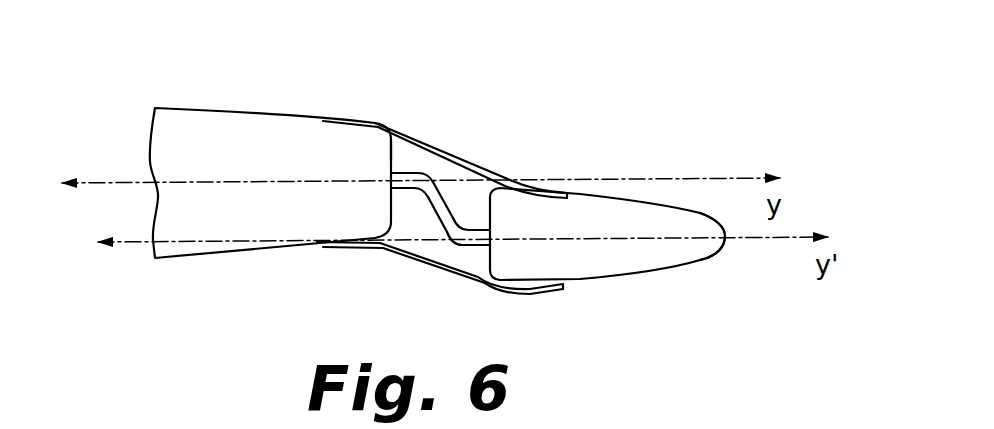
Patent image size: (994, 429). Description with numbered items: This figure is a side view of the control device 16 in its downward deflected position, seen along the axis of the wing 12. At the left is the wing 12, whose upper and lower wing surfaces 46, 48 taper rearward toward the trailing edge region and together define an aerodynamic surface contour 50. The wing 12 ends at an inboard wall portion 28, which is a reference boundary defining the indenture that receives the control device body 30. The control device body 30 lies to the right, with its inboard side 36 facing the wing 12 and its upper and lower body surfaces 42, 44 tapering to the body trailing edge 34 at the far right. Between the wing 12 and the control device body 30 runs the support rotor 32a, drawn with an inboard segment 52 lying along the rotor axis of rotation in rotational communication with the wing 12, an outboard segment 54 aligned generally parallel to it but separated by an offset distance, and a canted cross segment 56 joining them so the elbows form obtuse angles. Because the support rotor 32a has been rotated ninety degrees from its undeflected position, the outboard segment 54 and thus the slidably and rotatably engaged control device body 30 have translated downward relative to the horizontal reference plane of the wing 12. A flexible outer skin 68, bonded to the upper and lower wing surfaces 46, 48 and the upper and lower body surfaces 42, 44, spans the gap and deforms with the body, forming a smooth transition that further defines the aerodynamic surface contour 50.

The wing 12 is at (284, 161).
The control device 16 is at (598, 97).
The inboard wall portion 28 is at (403, 165).
The control device body 30 is at (573, 205).
The support rotor 32a is at (437, 217).
The body trailing edge 34 is at (723, 247).
The inboard side 36 is at (490, 262).
The upper body surface 42 is at (677, 210).
The lower body surface 44 is at (660, 275).
The upper wing surface 46 is at (277, 113).
The lower wing surface 48 is at (215, 256).
The aerodynamic surface contour 50 is at (205, 93).
The inboard segment 52 is at (425, 165).
The outboard segment 54 is at (477, 224).
The cross segment 56 is at (448, 195).
The flexible outer skin 68 is at (337, 117).